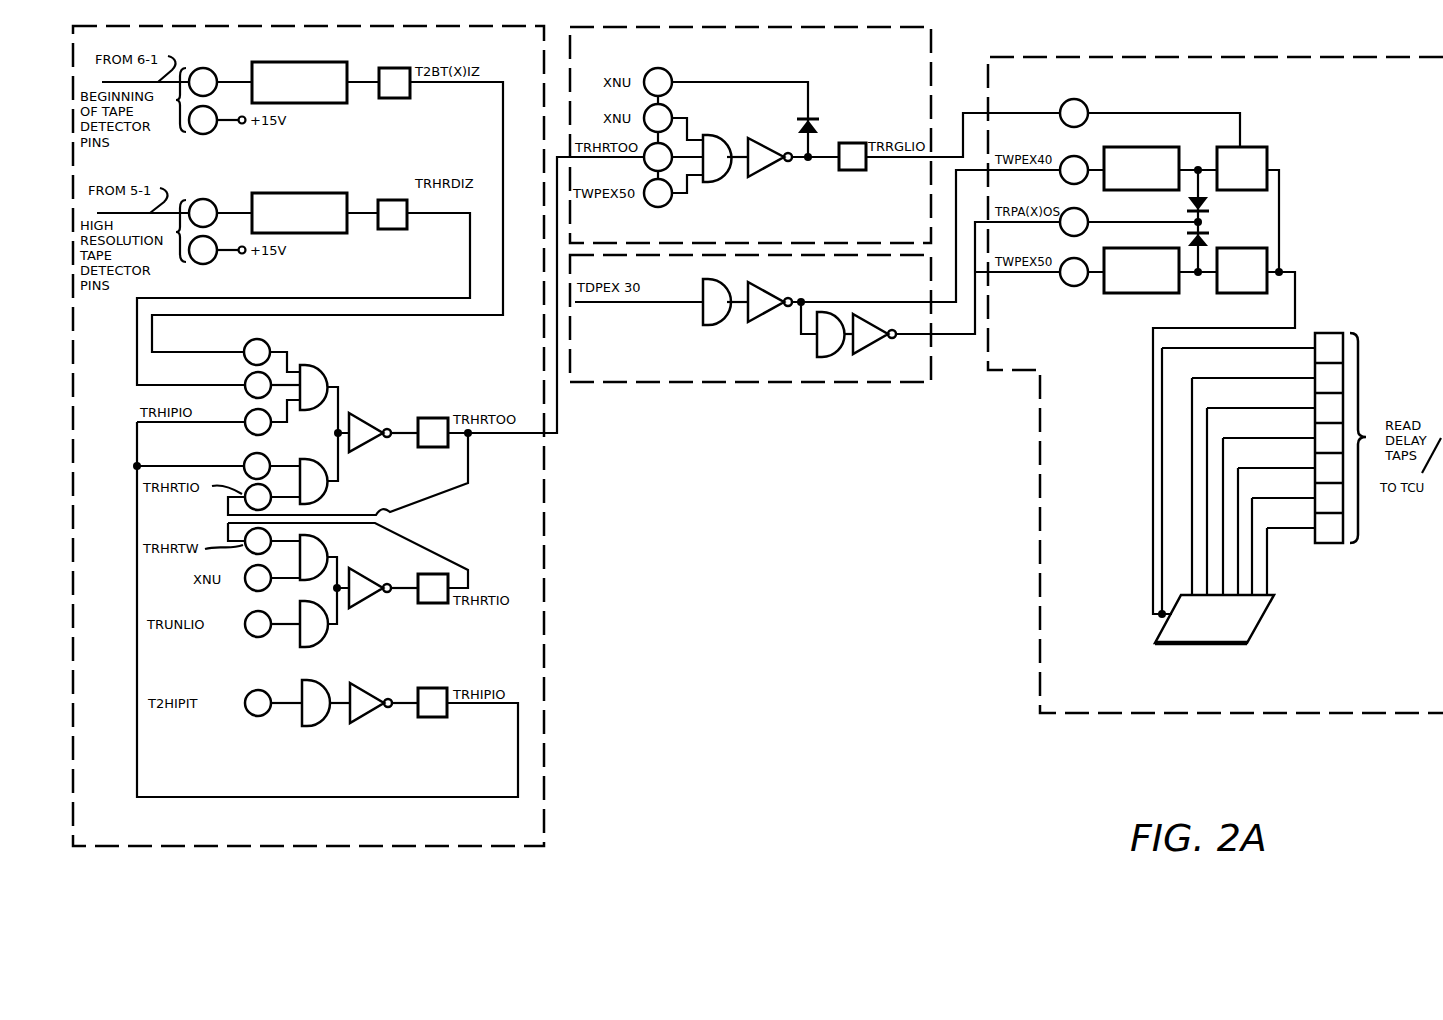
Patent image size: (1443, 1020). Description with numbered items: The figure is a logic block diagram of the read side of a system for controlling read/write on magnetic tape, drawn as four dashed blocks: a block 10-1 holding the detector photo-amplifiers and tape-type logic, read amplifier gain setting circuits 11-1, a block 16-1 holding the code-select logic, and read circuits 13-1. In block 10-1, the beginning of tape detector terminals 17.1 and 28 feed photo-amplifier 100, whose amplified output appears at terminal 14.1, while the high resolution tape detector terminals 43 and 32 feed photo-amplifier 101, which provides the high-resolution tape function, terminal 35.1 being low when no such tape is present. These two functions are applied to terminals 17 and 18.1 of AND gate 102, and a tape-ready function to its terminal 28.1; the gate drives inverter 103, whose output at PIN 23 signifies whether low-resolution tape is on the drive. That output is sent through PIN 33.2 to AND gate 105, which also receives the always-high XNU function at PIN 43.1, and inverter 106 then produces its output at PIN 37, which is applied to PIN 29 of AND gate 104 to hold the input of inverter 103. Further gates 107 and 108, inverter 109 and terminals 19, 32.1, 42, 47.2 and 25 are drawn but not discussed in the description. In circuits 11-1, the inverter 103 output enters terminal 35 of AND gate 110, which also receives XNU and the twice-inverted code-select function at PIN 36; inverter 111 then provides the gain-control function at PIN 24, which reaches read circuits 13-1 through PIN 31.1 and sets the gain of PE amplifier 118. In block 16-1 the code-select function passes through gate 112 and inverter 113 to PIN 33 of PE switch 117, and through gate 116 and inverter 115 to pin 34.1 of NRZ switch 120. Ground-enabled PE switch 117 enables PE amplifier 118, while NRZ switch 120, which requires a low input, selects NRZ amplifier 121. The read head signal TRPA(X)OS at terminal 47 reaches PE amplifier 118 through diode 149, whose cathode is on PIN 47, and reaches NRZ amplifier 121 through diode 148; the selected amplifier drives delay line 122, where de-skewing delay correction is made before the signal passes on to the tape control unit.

The photo-amplifier 100 is at (318, 103).
The photo-amplifier 101 is at (318, 233).
The AND gate 102 is at (322, 366).
The inverter 103 is at (365, 423).
The AND gate 104 is at (322, 493).
The AND gate 105 is at (322, 537).
The inverter 106 is at (364, 572).
The AND gate 107 is at (326, 634).
The AND gate 108 is at (314, 727).
The inverter 109 is at (367, 715).
The AND gate 110 is at (717, 135).
The inverter 111 is at (760, 168).
The gate 112 is at (719, 325).
The inverter 113 is at (770, 288).
The inverter 115 is at (866, 347).
The gate 116 is at (818, 344).
The PE switch 117 is at (1138, 129).
The PE amplifier 118 is at (1241, 147).
The NRZ switch 120 is at (1148, 294).
The NRZ amplifier 121 is at (1252, 294).
The delay line 122 is at (1222, 644).
The diode 148 is at (1190, 241).
The diode 149 is at (1190, 201).
The circuit board 10-1 is at (366, 847).
The read amplifier gain setting circuits 11-1 is at (933, 45).
The circuit board 16-1 is at (731, 383).
The read circuits 13-1 is at (1308, 714).
The beginning of tape detector terminal 17.1 is at (203, 82).
The beginning of tape detector terminal 28 is at (203, 120).
The high resolution tape detector terminal 43 is at (203, 213).
The high resolution tape detector terminal 32 is at (203, 250).
The terminal 14.1 is at (394, 83).
The terminal 35.1 is at (391, 203).
The terminal of AND gate 102 17 is at (257, 352).
The terminal of AND gate 102 18.1 is at (248, 380).
The terminal 28.1 is at (250, 414).
The connector pin 19 is at (257, 466).
The PIN of AND gate 104 29 is at (258, 497).
The PIN 23 is at (433, 432).
The PIN 37 is at (433, 588).
The input terminal of AND gate 105 33.2 is at (250, 550).
The PIN of AND gate 105 43.1 is at (250, 585).
The connector pin 32.1 is at (258, 637).
The connector pin 42 is at (258, 703).
The connector pin 47.2 is at (436, 718).
The connector pin 25 is at (658, 82).
The input terminal of AND gate 110 35 is at (658, 157).
The PIN of AND gate 110 36 is at (658, 193).
The PIN 24 is at (852, 156).
The PIN 31.1 is at (1074, 113).
The PIN of PE switch 117 33 is at (1074, 170).
The terminal 47 is at (1074, 222).
The pin of NRZ switch 120 34.1 is at (1074, 272).